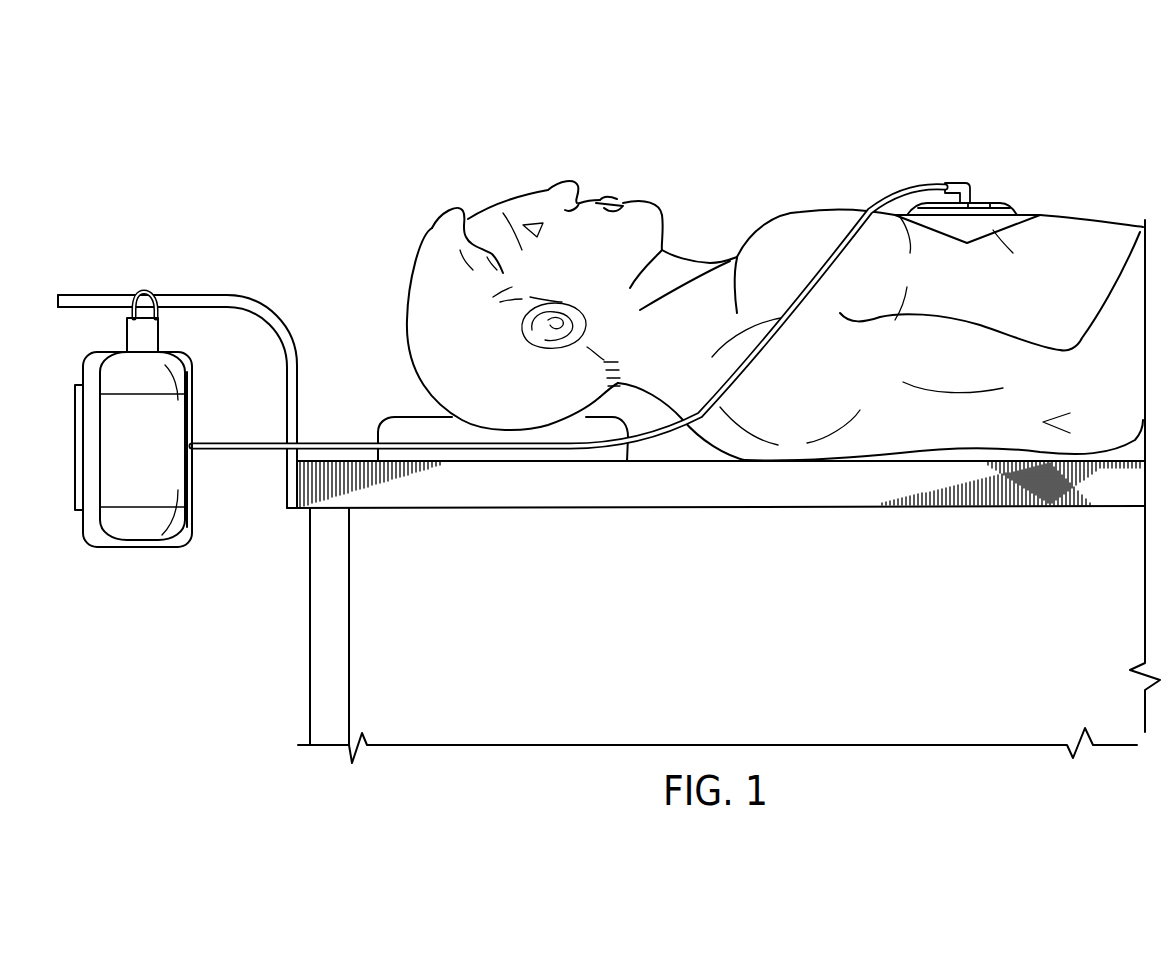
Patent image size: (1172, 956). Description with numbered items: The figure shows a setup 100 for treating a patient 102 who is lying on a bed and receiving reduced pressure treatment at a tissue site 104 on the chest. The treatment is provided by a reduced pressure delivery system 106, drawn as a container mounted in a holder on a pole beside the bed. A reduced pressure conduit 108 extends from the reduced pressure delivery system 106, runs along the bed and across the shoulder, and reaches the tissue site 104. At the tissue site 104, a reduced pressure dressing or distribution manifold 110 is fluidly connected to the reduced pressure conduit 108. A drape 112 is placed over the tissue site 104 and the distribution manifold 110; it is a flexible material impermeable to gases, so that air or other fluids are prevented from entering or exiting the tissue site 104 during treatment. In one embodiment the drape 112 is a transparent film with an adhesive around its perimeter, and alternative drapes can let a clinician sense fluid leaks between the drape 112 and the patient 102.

The setup 100 is at (463, 166).
The patient 102 is at (797, 212).
The tissue site 104 is at (1044, 185).
The reduced pressure delivery system 106 is at (88, 550).
The reduced pressure conduit 108 is at (252, 443).
The reduced pressure dressing or distribution manifold 110 is at (1000, 202).
The drape 112 is at (990, 235).